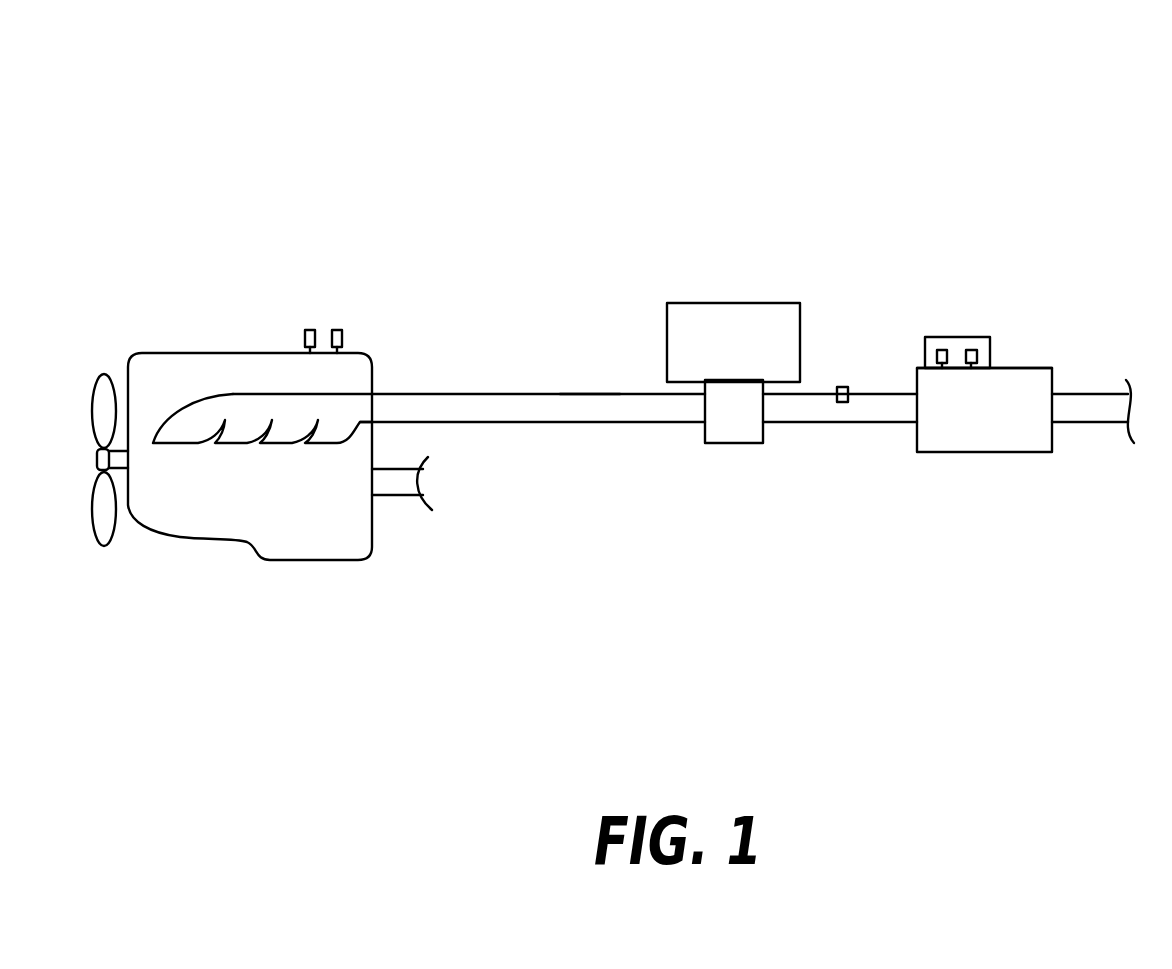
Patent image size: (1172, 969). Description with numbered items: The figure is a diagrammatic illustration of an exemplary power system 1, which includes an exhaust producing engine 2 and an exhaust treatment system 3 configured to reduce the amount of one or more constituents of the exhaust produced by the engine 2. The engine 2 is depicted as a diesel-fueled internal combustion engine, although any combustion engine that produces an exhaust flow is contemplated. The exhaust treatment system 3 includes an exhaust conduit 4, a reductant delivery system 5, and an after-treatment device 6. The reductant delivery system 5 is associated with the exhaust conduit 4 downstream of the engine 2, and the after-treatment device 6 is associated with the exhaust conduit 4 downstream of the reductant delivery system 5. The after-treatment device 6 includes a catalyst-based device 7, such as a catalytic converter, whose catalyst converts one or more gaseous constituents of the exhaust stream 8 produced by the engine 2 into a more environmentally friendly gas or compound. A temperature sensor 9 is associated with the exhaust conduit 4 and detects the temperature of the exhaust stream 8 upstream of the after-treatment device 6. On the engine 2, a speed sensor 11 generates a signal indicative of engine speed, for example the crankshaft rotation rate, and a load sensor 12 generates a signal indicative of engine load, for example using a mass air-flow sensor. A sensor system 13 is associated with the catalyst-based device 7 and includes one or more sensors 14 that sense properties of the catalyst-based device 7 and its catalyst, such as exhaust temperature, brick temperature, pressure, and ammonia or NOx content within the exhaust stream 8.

The power system 1 is at (640, 131).
The engine 2 is at (295, 578).
The exhaust treatment system 3 is at (578, 299).
The exhaust conduit 4 is at (443, 393).
The reductant delivery system 5 is at (805, 274).
The after-treatment device 6 is at (955, 487).
The catalyst-based device 7 is at (1028, 368).
The exhaust stream 8 is at (535, 412).
The temperature sensor 9 is at (842, 387).
The speed sensor 11 is at (337, 330).
The load sensor 12 is at (308, 330).
The sensor system 13 is at (982, 337).
The sensors 14 is at (972, 350).